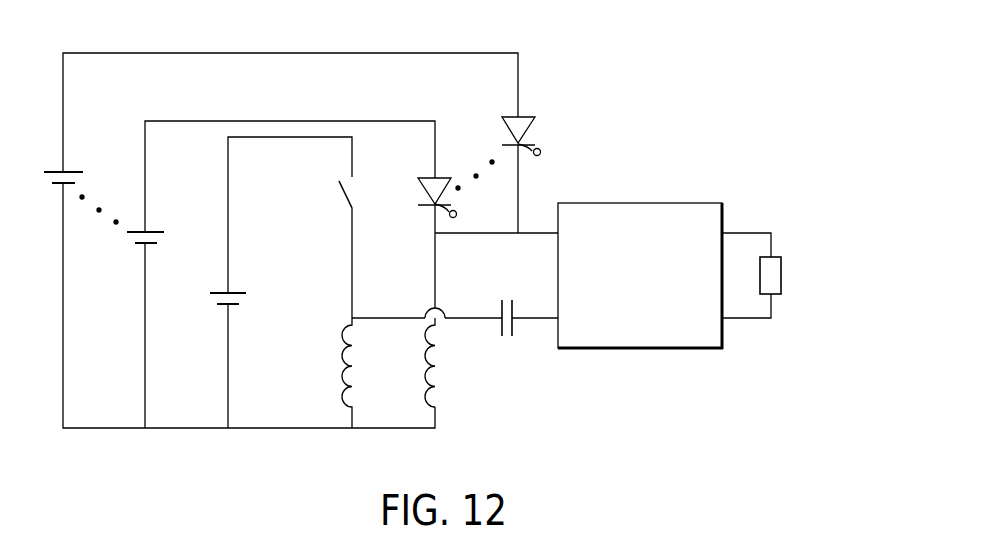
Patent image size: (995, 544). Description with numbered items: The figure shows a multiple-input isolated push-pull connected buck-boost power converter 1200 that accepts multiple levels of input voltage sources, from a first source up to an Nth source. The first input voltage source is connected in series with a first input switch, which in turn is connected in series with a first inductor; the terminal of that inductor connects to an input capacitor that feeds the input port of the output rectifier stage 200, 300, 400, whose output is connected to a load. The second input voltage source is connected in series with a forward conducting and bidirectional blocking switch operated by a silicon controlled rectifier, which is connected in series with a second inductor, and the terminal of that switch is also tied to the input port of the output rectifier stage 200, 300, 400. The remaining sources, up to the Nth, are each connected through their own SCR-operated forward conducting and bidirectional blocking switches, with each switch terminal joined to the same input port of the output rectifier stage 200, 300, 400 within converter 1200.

The multiple-input isolated push-pull connected buck-boost power converter 1200 is at (442, 227).
The output rectifier stage 200 is at (699, 249).
The output rectifier stage 300 is at (699, 249).
The output rectifier stage 400 is at (713, 174).